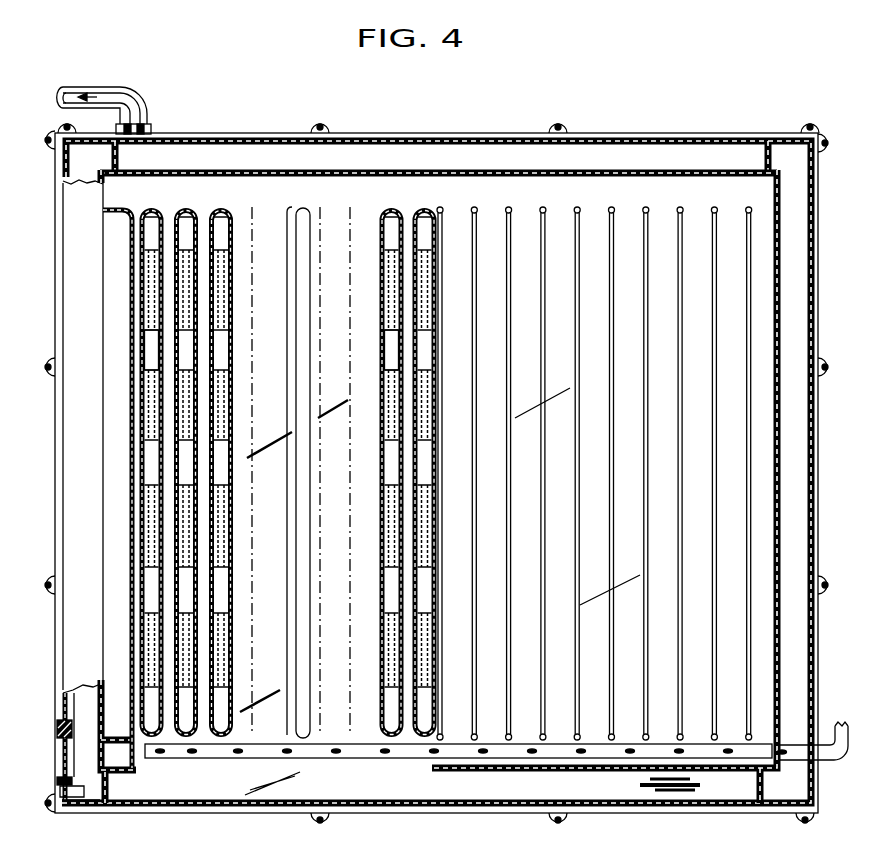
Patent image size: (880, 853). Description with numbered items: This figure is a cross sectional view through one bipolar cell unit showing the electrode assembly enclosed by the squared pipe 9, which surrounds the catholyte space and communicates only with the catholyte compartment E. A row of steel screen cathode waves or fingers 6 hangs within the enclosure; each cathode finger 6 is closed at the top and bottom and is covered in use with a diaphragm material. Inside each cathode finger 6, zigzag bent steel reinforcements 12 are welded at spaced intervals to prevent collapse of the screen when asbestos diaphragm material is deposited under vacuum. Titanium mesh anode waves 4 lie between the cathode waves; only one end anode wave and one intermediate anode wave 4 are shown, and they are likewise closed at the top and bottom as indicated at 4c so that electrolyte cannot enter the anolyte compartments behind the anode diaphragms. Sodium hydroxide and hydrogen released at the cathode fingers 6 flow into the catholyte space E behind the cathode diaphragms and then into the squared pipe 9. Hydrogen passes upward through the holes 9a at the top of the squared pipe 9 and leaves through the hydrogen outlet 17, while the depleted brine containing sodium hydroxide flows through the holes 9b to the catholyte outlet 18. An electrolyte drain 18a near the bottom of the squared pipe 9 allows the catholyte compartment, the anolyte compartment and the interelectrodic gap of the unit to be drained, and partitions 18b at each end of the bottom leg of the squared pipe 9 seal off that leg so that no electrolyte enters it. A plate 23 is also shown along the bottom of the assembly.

The anode wave 4 is at (132, 445).
The closed top and bottom of anode wave 4c is at (145, 205).
The cathode finger 6 is at (224, 212).
The squared pipe 9 is at (447, 150).
The holes at top of squared pipe 9a is at (268, 170).
The holes of squared pipe 9b is at (128, 745).
The zigzag bent steel reinforcement 12 is at (232, 322).
The hydrogen outlet 17 is at (143, 110).
The catholyte outlet 18 is at (62, 744).
The electrolyte drain 18a is at (82, 805).
The partition 18b is at (118, 806).
The support plate 23 is at (189, 752).
The catholyte compartment E is at (672, 772).